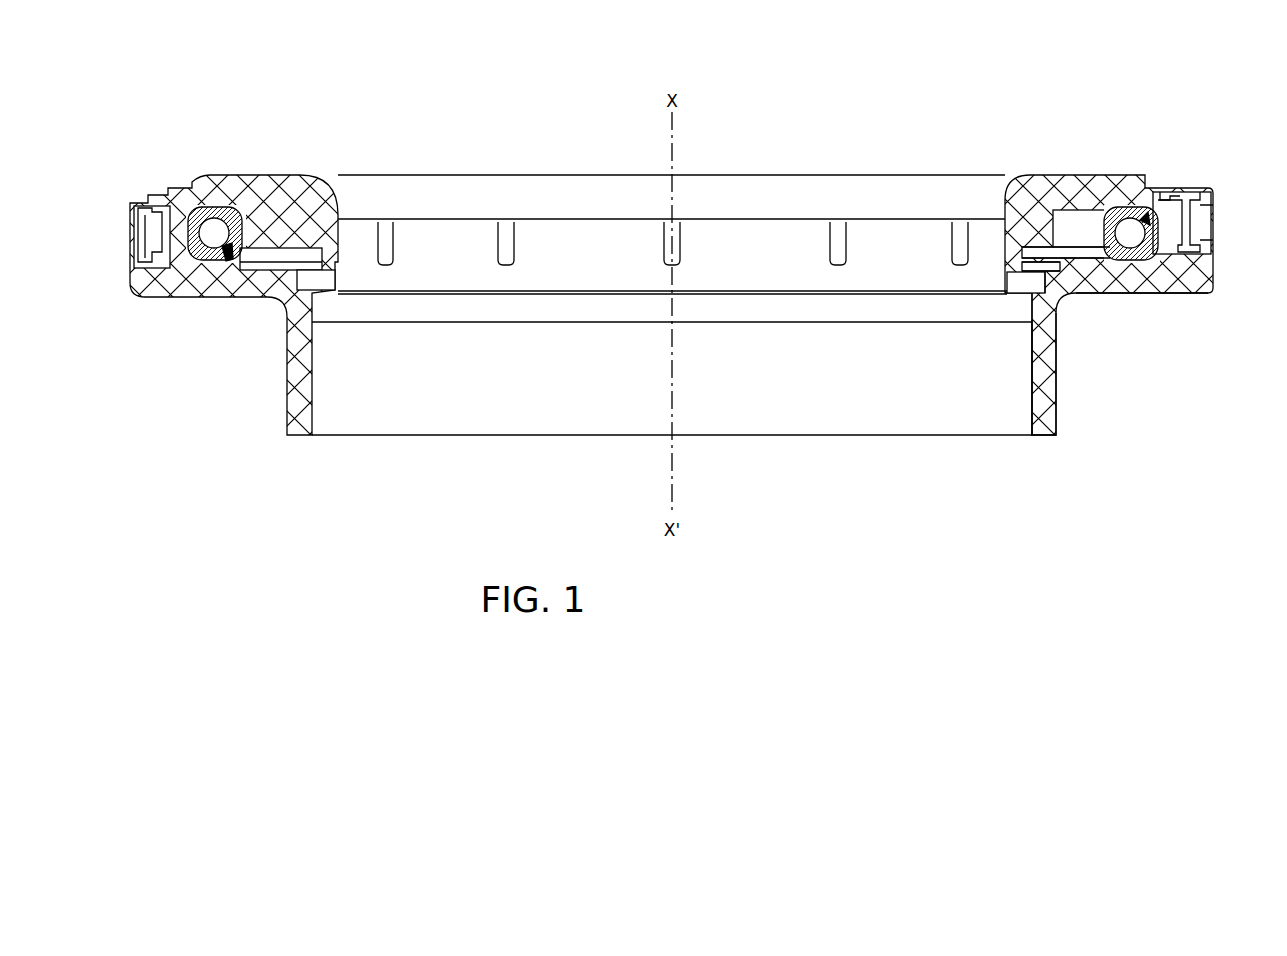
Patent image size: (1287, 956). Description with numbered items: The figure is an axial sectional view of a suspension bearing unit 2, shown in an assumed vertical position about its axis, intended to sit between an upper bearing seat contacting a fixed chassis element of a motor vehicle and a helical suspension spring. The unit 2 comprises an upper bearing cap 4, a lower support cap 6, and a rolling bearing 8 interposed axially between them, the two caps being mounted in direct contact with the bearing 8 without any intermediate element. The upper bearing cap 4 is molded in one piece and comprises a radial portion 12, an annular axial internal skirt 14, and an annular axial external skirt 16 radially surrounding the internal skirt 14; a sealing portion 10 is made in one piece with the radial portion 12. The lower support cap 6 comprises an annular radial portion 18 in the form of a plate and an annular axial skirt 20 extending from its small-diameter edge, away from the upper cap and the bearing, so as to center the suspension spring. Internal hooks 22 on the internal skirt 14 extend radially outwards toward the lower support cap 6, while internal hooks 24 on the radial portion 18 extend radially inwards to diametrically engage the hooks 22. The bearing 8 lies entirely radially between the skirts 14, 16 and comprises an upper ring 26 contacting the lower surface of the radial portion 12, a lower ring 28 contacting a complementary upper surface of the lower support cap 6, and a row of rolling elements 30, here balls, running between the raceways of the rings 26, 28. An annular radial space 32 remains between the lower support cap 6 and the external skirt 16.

The suspension bearing unit 2 is at (178, 108).
The upper bearing cap 4 is at (258, 175).
The lower support cap 6 is at (1058, 403).
The rolling bearing 8 is at (1148, 210).
The sealing portion 10 is at (1213, 226).
The radial portion 12 is at (1065, 190).
The annular axial internal skirt 14 is at (1007, 263).
The annular axial external skirt 16 is at (1213, 250).
The annular radial portion 18 is at (1140, 296).
The annular axial skirt 20 is at (1048, 358).
The internal hooks 22 is at (1045, 265).
The internal hooks 24 is at (1066, 297).
The upper ring 26 is at (1101, 206).
The lower ring 28 is at (1176, 212).
The rolling elements 30 is at (1130, 233).
The annular radial space 32 is at (134, 258).